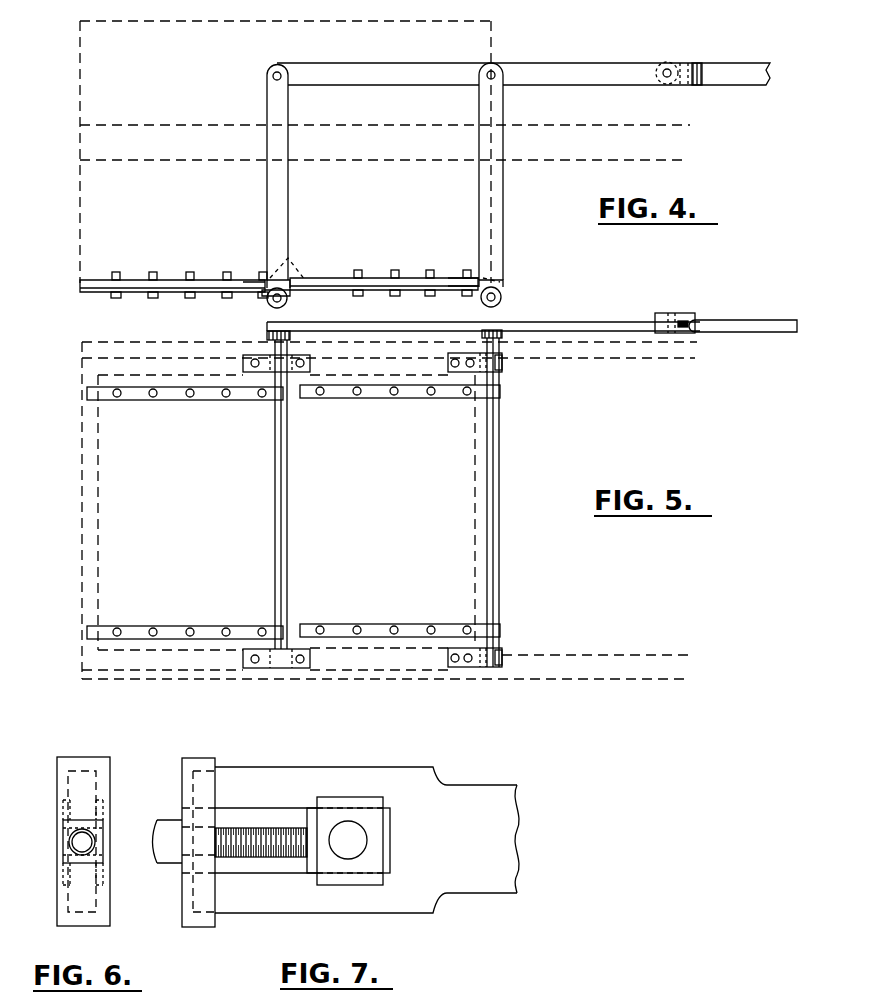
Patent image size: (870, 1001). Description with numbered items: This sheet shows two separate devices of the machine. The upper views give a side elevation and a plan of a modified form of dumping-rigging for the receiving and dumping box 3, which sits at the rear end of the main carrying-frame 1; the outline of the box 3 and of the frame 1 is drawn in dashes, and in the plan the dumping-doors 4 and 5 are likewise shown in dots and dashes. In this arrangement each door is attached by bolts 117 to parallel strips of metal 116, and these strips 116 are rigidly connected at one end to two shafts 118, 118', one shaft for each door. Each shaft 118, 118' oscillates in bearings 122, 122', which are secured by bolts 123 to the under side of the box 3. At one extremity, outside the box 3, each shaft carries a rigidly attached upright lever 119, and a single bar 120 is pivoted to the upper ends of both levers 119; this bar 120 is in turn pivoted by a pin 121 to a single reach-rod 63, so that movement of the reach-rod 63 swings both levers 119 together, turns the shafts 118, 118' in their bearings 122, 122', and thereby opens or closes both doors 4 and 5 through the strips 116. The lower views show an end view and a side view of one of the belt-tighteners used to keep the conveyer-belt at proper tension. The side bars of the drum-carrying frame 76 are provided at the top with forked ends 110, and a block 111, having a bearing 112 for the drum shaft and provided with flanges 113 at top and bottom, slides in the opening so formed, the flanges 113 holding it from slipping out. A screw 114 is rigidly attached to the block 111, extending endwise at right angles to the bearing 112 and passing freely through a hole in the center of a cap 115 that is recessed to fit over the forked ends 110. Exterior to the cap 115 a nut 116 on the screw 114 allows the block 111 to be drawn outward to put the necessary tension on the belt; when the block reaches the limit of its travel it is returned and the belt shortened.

In FIG. 4, the main carrying-frame 1 is at (385, 142).
In FIG. 5, the main carrying-frame 1 is at (389, 509).
In FIG. 4, the body or box portion 3 is at (285, 152).
In FIG. 4, the dumping-door 4 is at (372, 285).
In FIG. 4, the dumping-door 5 is at (170, 287).
In FIG. 4, the reach-rod 63 is at (722, 75).
In FIG. 5, the reach-rod 63 is at (728, 320).
In FIG. 7, the drum-carrying frame 76 is at (480, 841).
In FIG. 7, the forked ends 110 is at (367, 840).
In FIG. 6, the block 111 is at (63, 800).
In FIG. 7, the block 111 is at (368, 822).
In FIG. 7, the bearing 112 is at (349, 840).
In FIG. 7, the flanges 113 is at (330, 806).
In FIG. 6, the screw 114 is at (78, 842).
In FIG. 7, the screw 114 is at (268, 852).
In FIG. 6, the cap 115 is at (70, 768).
In FIG. 7, the cap 115 is at (190, 767).
In FIG. 5, the nut / strips of metal 116 is at (178, 400).
In FIG. 6, the nut / strips of metal 116 is at (92, 838).
In FIG. 5, the bolts 117 is at (118, 400).
In FIG. 4, the shaft 118 is at (301, 299).
In FIG. 5, the shaft 118 is at (252, 494).
In FIG. 4, the shaft 118' is at (518, 300).
In FIG. 5, the shaft 118' is at (524, 502).
In FIG. 4, the upright lever 119 is at (279, 199).
In FIG. 4, the bar 120 is at (523, 74).
In FIG. 5, the bar 120 is at (628, 322).
In FIG. 4, the pin 121 is at (664, 68).
In FIG. 5, the pin 121 is at (676, 320).
In FIG. 4, the bearing 122 is at (254, 302).
In FIG. 5, the bearing 122 is at (294, 534).
In FIG. 4, the bearing 122' is at (505, 290).
In FIG. 5, the bearing 122' is at (506, 510).
In FIG. 5, the bolts 123 is at (254, 668).